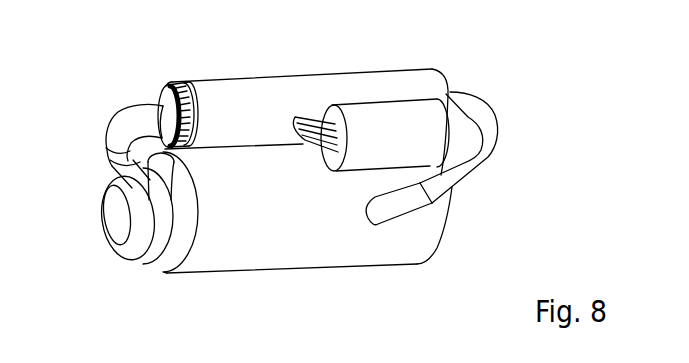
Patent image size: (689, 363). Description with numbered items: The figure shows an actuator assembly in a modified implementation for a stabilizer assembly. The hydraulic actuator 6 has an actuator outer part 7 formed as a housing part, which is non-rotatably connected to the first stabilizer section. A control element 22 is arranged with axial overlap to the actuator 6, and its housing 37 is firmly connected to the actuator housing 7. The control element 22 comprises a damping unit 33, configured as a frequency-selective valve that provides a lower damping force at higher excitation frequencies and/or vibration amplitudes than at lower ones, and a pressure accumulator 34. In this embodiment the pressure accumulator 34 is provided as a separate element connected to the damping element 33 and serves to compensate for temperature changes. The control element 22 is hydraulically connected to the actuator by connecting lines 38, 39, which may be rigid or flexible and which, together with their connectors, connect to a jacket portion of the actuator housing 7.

The hydraulic actuator 6 is at (292, 262).
The actuator outer part 7 is at (355, 248).
The control element 22 is at (397, 70).
The damping unit 33 is at (290, 87).
The pressure accumulator 34 is at (418, 115).
The housing 37 is at (218, 99).
The hydraulic line 38 is at (457, 163).
The hydraulic line 39 is at (122, 128).